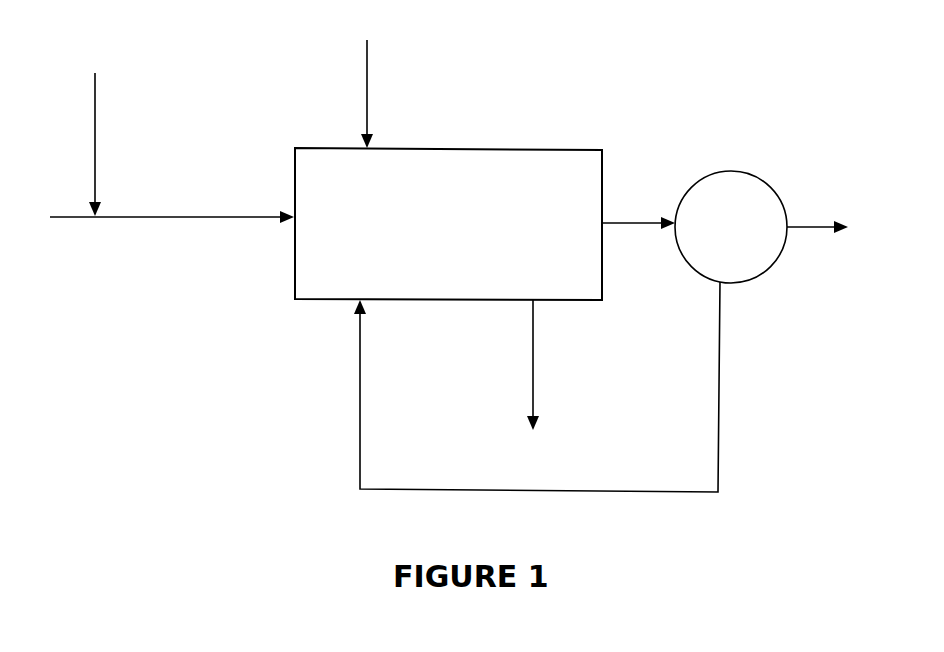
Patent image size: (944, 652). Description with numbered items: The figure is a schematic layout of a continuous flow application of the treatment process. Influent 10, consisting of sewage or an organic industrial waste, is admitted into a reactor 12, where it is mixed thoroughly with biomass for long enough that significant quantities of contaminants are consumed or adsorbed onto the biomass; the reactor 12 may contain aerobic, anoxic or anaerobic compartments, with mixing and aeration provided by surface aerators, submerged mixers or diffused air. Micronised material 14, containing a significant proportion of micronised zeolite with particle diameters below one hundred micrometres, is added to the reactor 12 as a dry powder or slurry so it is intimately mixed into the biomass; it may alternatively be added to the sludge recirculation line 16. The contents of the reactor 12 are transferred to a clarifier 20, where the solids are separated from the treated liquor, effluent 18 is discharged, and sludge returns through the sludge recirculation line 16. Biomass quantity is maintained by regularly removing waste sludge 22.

The influent 10 is at (67, 218).
The reactor 12 is at (448, 224).
The micronised material 14 is at (367, 78).
The sludge recirculation line 16 is at (718, 400).
The effluent 18 is at (797, 213).
The clarifier 20 is at (687, 187).
The waste sludge 22 is at (533, 365).